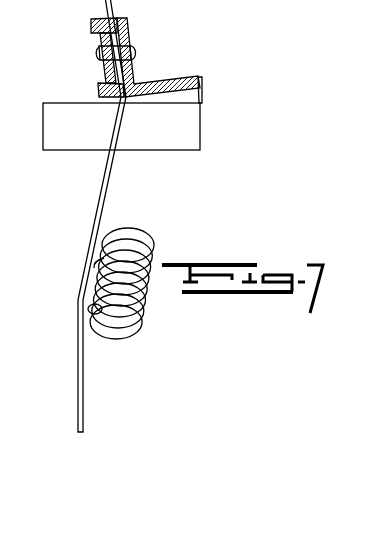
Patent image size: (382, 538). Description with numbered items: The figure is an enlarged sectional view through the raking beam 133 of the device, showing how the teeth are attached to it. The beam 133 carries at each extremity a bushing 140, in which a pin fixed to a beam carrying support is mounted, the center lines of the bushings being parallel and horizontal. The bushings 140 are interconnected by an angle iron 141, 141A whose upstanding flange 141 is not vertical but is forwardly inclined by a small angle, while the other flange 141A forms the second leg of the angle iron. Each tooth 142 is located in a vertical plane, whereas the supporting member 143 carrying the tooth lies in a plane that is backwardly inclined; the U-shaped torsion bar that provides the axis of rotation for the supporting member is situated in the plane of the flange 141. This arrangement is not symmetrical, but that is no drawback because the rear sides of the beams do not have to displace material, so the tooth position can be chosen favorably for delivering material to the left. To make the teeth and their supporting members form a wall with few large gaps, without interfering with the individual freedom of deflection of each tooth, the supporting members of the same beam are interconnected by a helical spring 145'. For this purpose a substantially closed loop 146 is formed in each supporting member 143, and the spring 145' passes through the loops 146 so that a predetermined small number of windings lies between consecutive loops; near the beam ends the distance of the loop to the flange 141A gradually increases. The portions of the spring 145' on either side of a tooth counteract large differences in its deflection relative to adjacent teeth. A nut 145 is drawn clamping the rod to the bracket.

The beam 133 is at (168, 60).
The bushing 140 is at (173, 151).
The upstanding flange of angle iron 141 is at (128, 31).
The angle iron flange 141A is at (200, 83).
The tooth 142 is at (79, 368).
The supporting member 143 is at (102, 150).
The nut 145 is at (96, 48).
The helical spring 145' is at (140, 283).
The loop 146 is at (88, 310).